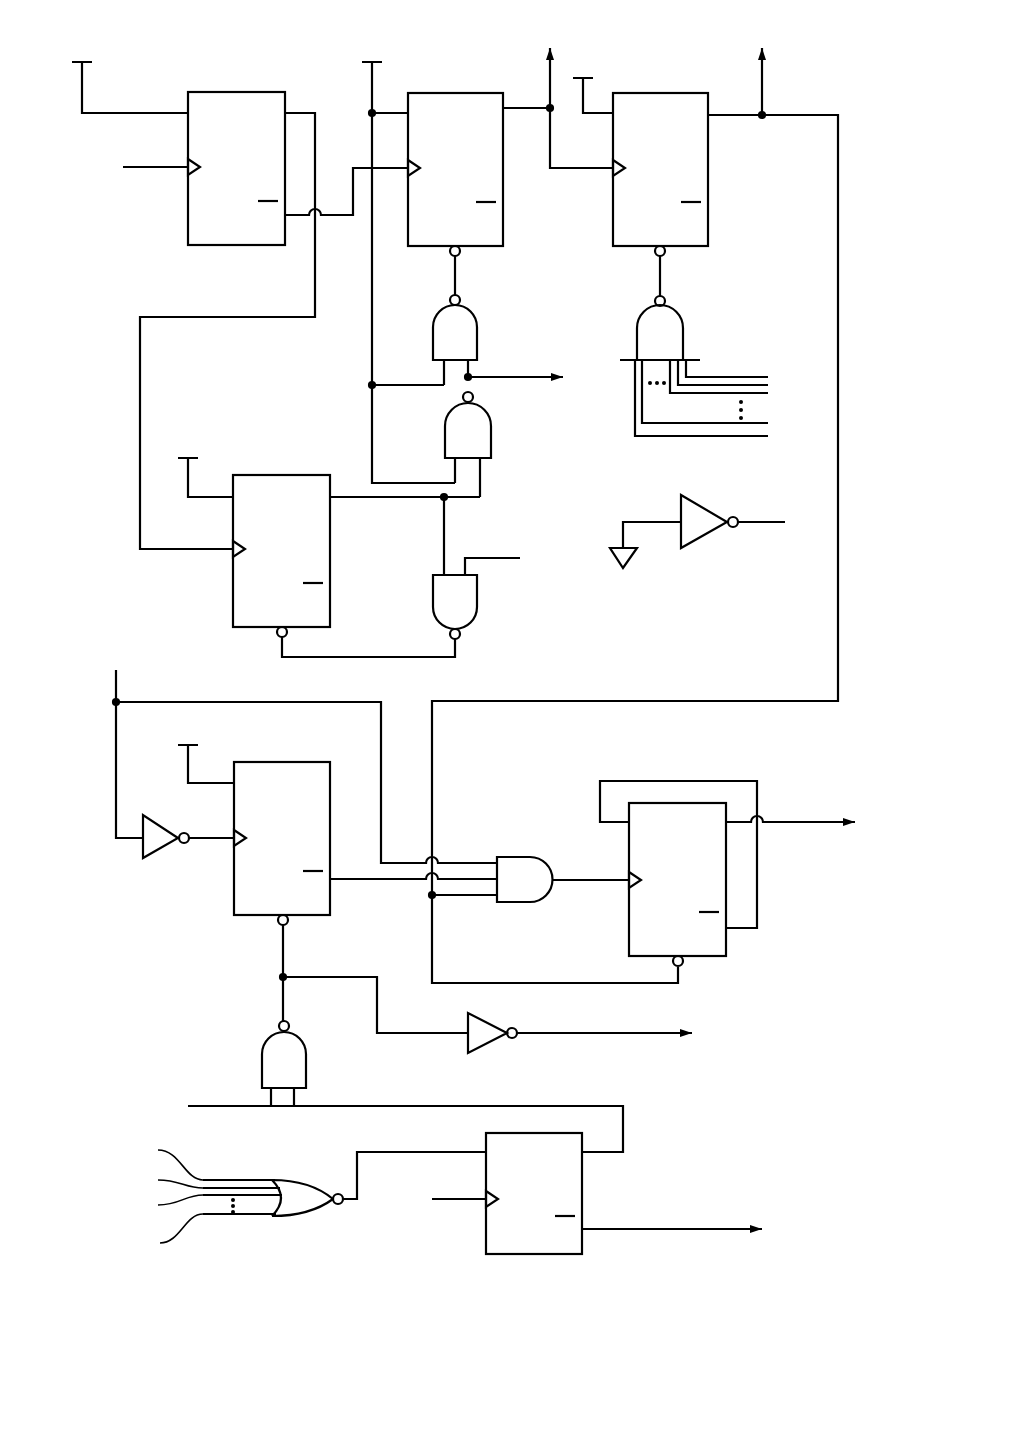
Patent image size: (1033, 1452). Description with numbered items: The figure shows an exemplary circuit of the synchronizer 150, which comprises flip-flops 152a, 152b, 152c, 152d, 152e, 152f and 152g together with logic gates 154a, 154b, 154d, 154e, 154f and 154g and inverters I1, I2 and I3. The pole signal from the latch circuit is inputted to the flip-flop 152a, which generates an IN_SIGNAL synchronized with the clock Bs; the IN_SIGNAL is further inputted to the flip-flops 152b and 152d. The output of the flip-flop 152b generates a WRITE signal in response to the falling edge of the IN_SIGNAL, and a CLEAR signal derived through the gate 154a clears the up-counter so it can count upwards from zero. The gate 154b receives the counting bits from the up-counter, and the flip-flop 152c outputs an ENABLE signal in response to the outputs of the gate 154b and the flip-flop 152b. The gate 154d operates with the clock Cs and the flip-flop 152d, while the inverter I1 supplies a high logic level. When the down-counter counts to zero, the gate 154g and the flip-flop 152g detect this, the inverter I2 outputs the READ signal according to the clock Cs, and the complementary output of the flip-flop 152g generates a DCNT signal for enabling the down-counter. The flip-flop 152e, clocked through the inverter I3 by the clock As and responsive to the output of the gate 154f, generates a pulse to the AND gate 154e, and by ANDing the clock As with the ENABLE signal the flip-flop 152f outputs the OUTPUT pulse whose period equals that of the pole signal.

The synchronizer 150 is at (88, 251).
The flip-flop 152a is at (235, 92).
The flip-flop 152b is at (455, 93).
The flip-flop 152c is at (660, 93).
The flip-flop 152d is at (280, 475).
The flip-flop 152e is at (280, 762).
The flip-flop 152f is at (675, 803).
The flip-flop 152g is at (582, 1197).
The logic gate 154a is at (477, 332).
The logic gate 154b is at (683, 330).
The logic gate 154d is at (491, 432).
The AND gate 154e is at (512, 857).
The logic gate 154f is at (306, 1072).
The logic gate 154g is at (302, 1180).
The inverter I1 is at (703, 508).
The inverter I2 is at (485, 1045).
The inverter I3 is at (163, 848).